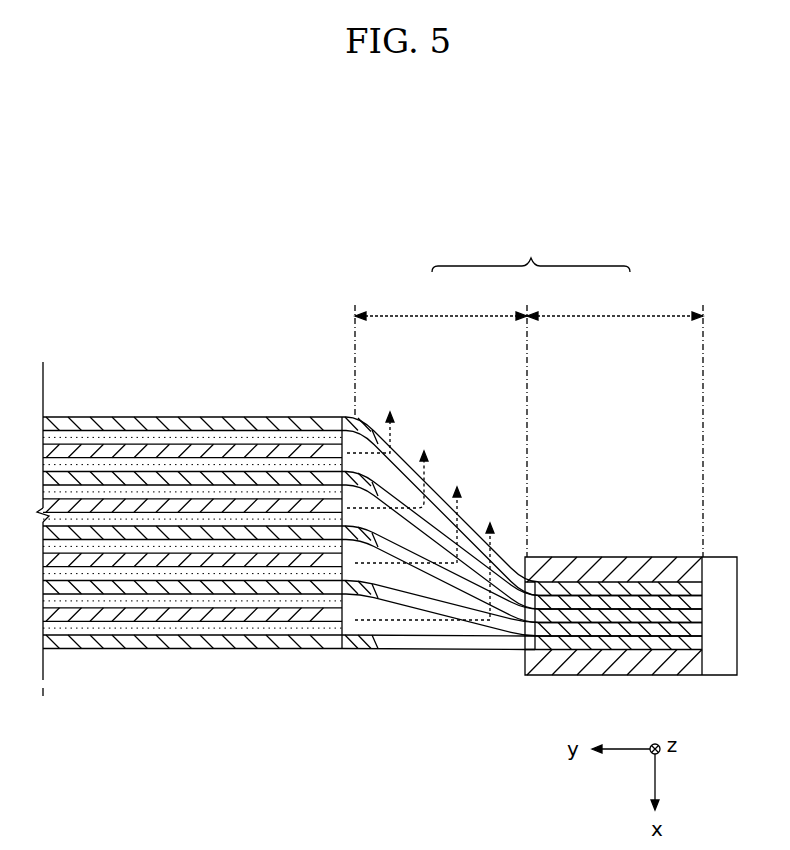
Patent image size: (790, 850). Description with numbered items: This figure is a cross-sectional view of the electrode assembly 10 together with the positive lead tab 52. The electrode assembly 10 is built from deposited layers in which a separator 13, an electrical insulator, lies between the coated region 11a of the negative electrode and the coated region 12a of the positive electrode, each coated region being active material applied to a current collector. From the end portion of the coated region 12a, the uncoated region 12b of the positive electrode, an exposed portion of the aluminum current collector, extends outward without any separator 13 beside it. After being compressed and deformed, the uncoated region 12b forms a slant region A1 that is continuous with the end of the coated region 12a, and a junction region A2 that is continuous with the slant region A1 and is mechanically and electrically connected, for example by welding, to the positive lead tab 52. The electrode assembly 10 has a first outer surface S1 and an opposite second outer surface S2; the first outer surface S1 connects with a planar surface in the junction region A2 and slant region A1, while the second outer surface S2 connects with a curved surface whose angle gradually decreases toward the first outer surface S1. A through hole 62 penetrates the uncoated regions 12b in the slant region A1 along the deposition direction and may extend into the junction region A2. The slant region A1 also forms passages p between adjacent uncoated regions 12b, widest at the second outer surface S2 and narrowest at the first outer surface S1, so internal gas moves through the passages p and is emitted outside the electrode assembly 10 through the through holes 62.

The electrode assembly 10 is at (372, 191).
The coated region of the negative electrode 11a is at (175, 503).
The coated region of the positive electrode 12a is at (252, 482).
The uncoated region of the positive electrode 12b is at (531, 249).
The separator 13 is at (120, 490).
The positive lead tab 52 is at (620, 557).
The through hole 62 is at (520, 617).
The passage p is at (452, 565).
The first outer surface S1 is at (144, 649).
The second outer surface S2 is at (137, 416).
The slant region A1 is at (441, 419).
The junction region A2 is at (615, 419).